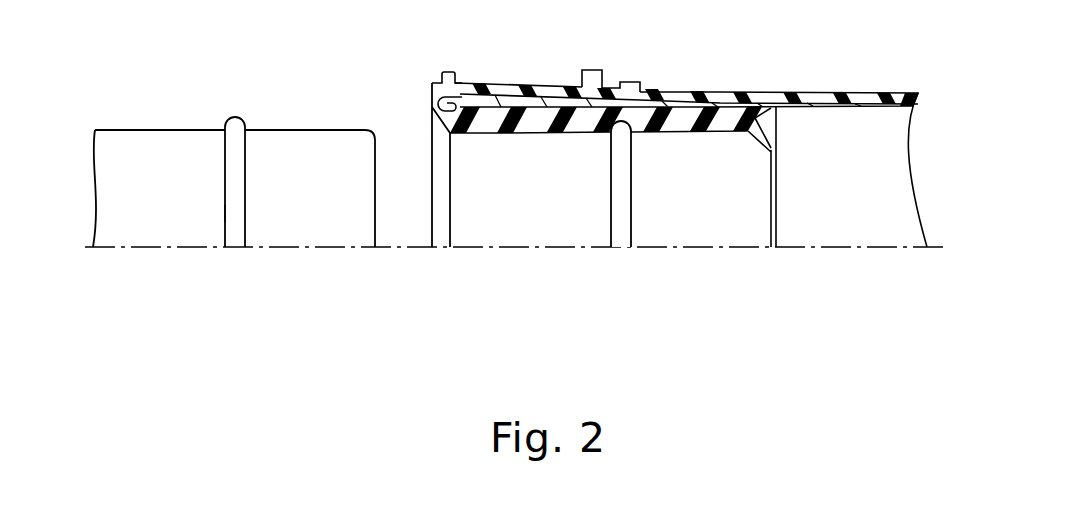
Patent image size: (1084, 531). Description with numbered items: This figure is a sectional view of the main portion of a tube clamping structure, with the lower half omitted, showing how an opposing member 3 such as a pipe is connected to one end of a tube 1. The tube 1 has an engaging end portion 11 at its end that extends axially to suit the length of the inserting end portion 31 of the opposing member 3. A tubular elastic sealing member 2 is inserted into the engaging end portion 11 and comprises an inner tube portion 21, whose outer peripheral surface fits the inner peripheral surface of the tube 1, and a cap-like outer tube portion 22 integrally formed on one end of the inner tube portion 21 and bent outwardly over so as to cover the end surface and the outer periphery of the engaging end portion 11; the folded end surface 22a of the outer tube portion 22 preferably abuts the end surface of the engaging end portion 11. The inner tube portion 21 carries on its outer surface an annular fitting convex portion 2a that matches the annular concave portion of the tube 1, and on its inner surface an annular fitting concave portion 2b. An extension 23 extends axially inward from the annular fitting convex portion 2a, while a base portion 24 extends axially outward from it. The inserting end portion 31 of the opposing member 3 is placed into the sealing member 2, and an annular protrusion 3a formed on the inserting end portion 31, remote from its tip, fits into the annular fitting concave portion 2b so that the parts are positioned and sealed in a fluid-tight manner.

The tube 1 is at (811, 83).
The engaging end portion 11 is at (668, 97).
The elastic sealing member 2 is at (438, 68).
The annular fitting convex portion 2a is at (627, 97).
The annular fitting concave portion 2b is at (624, 138).
The inner tube portion 21 is at (481, 136).
The outer tube portion 22 is at (507, 88).
The folded end surface 22a is at (437, 108).
The extension 23 is at (715, 123).
The base portion 24 is at (544, 116).
The opposing member 3 is at (170, 119).
The inserting end portion 31 is at (358, 128).
The annular protrusion 3a is at (225, 213).